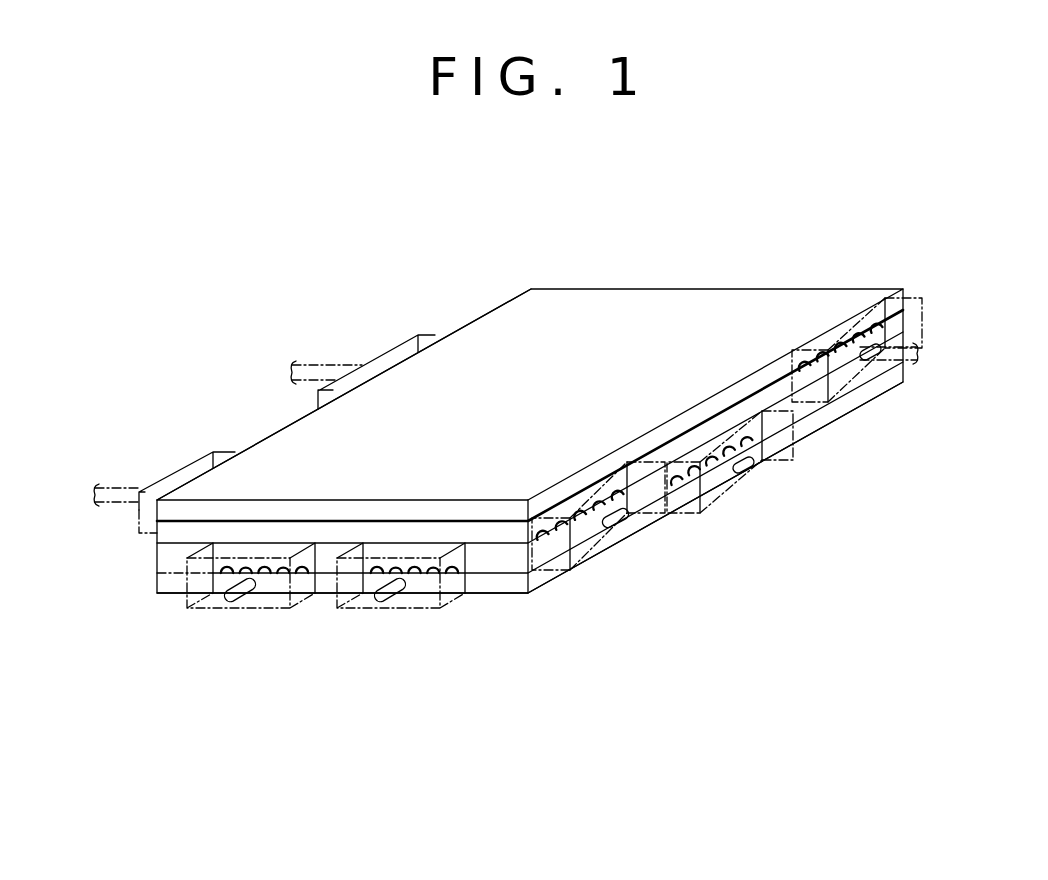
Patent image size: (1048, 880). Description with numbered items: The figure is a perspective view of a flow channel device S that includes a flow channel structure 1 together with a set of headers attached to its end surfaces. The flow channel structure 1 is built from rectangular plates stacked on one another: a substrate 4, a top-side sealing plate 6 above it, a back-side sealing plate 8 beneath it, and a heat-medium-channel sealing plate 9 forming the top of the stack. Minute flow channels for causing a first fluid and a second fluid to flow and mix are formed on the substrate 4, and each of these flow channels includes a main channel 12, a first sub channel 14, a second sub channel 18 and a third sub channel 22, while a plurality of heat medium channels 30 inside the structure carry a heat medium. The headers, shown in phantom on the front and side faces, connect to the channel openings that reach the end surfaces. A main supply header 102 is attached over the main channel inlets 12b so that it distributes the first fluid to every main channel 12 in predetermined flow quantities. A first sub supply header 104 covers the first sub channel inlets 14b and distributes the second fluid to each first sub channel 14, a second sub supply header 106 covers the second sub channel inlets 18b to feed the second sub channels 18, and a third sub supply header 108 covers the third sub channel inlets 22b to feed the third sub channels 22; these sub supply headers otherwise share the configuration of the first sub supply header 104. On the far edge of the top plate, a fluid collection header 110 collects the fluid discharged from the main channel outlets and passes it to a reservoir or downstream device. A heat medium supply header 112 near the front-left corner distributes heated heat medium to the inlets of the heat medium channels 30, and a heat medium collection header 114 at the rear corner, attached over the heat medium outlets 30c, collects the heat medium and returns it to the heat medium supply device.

The flow channel device S is at (812, 161).
The flow channel structure 1 is at (650, 285).
The heat-medium-channel sealing plate 9 is at (310, 432).
The top-side sealing plate 6 is at (178, 535).
The substrate 4 is at (175, 560).
The back-side sealing plate 8 is at (175, 583).
The fluid collection header 110 is at (372, 345).
The heat medium supply header 112 is at (178, 465).
The heat medium collection header 114 is at (922, 327).
The second sub channel 18 is at (233, 629).
The second sub channel inlet 18b is at (229, 580).
The second sub supply header 106 is at (272, 610).
The first sub channel 14 is at (434, 629).
The first sub channel inlet 14b is at (453, 580).
The first sub supply header 104 is at (389, 612).
The main channel 12 is at (643, 570).
The main channel inlet 12b is at (583, 518).
The main supply header 102 is at (571, 548).
The third sub channel 22 is at (809, 478).
The third sub channel inlet 22b is at (742, 452).
The third sub supply header 108 is at (740, 495).
The heat medium channel 30 is at (899, 361).
The heat medium outlet 30c is at (847, 350).